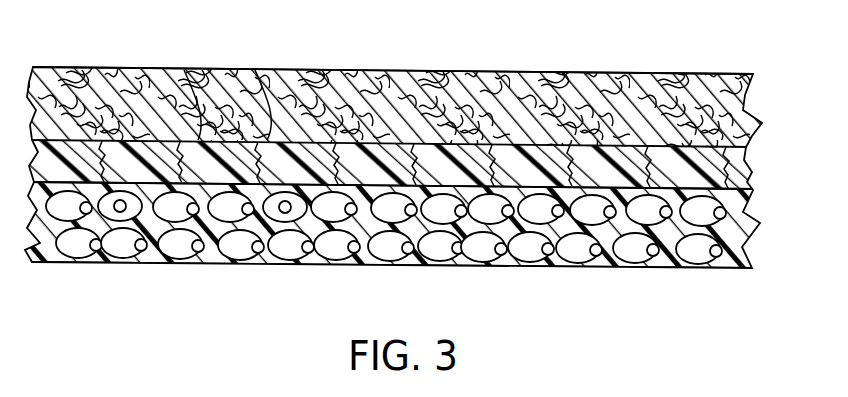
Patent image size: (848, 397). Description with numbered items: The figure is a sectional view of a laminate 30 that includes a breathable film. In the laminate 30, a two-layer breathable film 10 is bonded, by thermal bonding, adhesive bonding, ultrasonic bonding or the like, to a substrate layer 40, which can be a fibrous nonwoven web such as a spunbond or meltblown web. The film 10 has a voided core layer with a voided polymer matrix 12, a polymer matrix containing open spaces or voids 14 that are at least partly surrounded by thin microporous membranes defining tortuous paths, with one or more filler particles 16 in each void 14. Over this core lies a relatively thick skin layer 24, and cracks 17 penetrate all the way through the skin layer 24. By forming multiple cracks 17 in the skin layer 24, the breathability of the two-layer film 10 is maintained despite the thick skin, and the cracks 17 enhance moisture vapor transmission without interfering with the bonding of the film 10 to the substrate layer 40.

The two-layer breathable film 10 is at (750, 208).
The voided polymer matrix 12 is at (546, 269).
The voids 14 is at (478, 266).
The filler particles 16 is at (496, 264).
The cracks 17 is at (255, 70).
The skin layer 24 is at (748, 174).
The laminate 30 is at (744, 116).
The substrate layer 40 is at (557, 70).